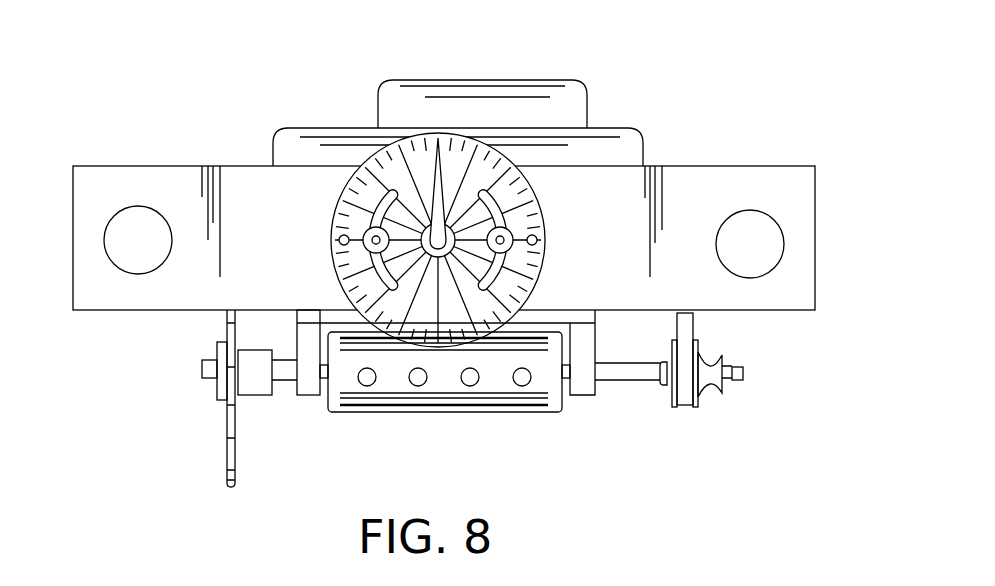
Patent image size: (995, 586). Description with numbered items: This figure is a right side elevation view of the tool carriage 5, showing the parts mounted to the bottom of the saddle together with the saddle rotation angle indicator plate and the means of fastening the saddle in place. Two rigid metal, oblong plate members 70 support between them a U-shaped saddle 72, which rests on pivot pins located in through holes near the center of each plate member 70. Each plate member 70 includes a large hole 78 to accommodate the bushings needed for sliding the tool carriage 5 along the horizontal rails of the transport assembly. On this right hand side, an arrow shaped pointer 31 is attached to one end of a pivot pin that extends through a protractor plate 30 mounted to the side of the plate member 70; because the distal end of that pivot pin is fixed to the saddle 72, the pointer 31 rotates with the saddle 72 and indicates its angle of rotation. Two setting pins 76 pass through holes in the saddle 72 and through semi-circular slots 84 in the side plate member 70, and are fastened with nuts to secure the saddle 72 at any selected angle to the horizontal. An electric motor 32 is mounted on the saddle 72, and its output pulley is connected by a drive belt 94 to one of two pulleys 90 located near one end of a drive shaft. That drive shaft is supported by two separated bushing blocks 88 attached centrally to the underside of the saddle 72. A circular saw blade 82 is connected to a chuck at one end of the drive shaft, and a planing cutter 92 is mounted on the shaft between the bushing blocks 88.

The tool carriage 5 is at (197, 129).
The protractor plate 30 is at (440, 213).
The arrow shaped pointer 31 is at (433, 193).
The electric motor 32 is at (602, 124).
The plate member 70 is at (688, 166).
The saddle 72 is at (471, 357).
The setting pin 76 is at (337, 219).
The large hole 78 is at (115, 245).
The circular saw blade 82 is at (228, 453).
The semi-circular slot 84 is at (362, 280).
The bushing block 88 is at (305, 390).
The pulley 90 is at (702, 393).
The planing cutter 92 is at (502, 383).
The drive belt 94 is at (693, 320).